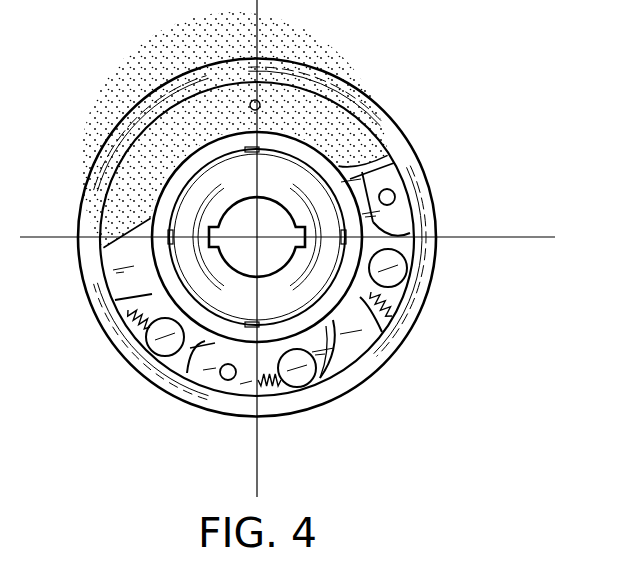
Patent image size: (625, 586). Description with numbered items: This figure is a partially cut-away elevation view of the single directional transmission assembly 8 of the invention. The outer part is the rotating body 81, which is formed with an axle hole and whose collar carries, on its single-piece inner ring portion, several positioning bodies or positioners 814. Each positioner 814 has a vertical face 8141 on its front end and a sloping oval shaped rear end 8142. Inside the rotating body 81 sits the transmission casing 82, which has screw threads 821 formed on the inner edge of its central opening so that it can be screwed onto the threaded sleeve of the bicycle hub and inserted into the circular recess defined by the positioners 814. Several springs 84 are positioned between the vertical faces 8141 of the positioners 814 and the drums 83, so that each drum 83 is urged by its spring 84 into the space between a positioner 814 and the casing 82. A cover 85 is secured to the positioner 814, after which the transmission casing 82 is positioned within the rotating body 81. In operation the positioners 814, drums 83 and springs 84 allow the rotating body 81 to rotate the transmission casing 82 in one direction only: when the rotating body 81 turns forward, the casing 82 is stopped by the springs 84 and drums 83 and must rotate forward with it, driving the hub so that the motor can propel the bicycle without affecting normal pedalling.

The single directional transmission assembly 8 is at (102, 85).
The rotating body 81 is at (352, 392).
The positioner 814 is at (358, 345).
The vertical face 8141 is at (388, 333).
The sloping oval shaped rear end 8142 is at (321, 382).
The transmission casing 82 is at (337, 187).
The screw threads 821 is at (307, 168).
The drum 83 is at (383, 264).
The spring 84 is at (393, 303).
The cover 85 is at (300, 107).